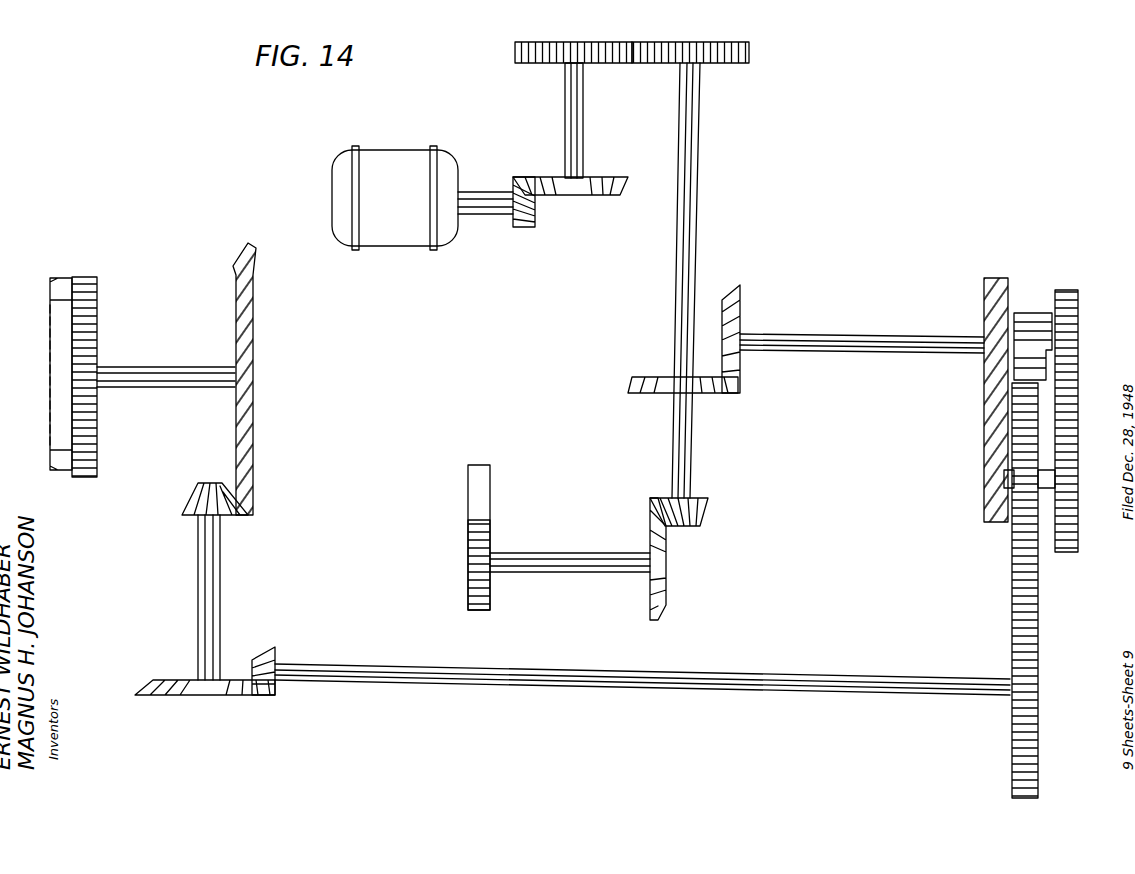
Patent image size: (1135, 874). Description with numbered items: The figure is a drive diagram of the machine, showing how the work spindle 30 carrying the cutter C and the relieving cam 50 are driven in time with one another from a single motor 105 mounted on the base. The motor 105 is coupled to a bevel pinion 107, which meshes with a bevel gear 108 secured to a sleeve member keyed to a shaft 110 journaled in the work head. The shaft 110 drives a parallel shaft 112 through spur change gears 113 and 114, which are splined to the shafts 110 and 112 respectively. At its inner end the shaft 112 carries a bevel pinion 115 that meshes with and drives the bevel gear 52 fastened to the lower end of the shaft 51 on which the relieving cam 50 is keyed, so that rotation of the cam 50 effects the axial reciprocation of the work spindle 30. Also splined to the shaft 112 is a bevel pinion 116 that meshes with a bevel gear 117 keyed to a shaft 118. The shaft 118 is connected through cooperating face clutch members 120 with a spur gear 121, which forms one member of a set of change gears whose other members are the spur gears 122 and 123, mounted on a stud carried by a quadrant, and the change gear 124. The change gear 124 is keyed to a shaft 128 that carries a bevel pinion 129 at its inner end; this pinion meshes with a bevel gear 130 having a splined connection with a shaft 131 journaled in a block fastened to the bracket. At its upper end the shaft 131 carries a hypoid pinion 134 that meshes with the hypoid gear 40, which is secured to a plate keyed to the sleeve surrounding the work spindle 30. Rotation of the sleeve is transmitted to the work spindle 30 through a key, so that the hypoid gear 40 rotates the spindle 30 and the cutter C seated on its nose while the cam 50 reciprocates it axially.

The cutter C is at (60, 314).
The work spindle 30 is at (160, 393).
The hypoid gear 40 is at (256, 300).
The relieving cam 50 is at (490, 511).
The shaft 51 is at (562, 552).
The bevel gear 52 is at (648, 606).
The motor 105 is at (401, 240).
The bevel pinion 107 is at (520, 232).
The bevel gear 108 is at (588, 199).
The shaft 110 is at (587, 136).
The shaft 112 is at (702, 174).
The spur change gear 113 is at (548, 44).
The spur change gear 114 is at (678, 44).
The bevel pinion 115 is at (708, 512).
The bevel pinion 116 is at (652, 394).
The bevel gear 117 is at (744, 312).
The shaft 118 is at (858, 364).
The face clutch members 120 is at (1024, 312).
The spur gear 121 is at (1082, 334).
The spur gear 122 is at (1082, 480).
The spur gear 123 is at (1014, 522).
The change gear 124 is at (1042, 722).
The shaft 128 is at (849, 668).
The bevel pinion 129 is at (268, 655).
The bevel gear 130 is at (232, 697).
The shaft 131 is at (226, 586).
The hypoid pinion 134 is at (194, 497).